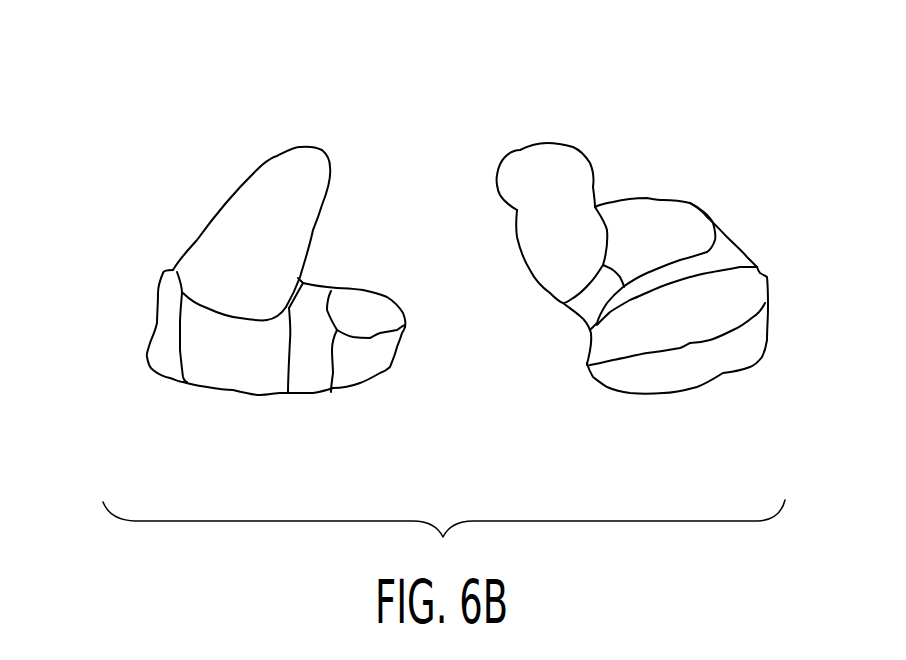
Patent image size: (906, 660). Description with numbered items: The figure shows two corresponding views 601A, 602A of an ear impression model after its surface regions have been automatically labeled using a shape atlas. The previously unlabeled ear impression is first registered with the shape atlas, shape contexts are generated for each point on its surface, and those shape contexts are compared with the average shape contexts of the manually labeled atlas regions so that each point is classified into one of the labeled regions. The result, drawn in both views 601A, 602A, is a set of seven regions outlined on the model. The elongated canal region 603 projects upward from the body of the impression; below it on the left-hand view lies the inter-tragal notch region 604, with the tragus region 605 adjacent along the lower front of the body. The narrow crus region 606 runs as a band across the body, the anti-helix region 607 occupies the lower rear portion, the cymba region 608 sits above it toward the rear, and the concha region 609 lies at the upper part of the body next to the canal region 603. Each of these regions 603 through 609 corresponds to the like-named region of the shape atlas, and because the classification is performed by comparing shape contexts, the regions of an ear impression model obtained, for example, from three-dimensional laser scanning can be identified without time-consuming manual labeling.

The labeled view of ear impression 601A is at (280, 127).
The labeled view of ear impression 602A is at (562, 124).
The canal region 603 is at (242, 206).
The inter-tragal notch region 604 is at (160, 331).
The tragus region 605 is at (233, 380).
The crus region 606 is at (313, 383).
The anti-helix region 607 is at (377, 373).
The cymba region 608 is at (373, 307).
The concha region 609 is at (303, 276).